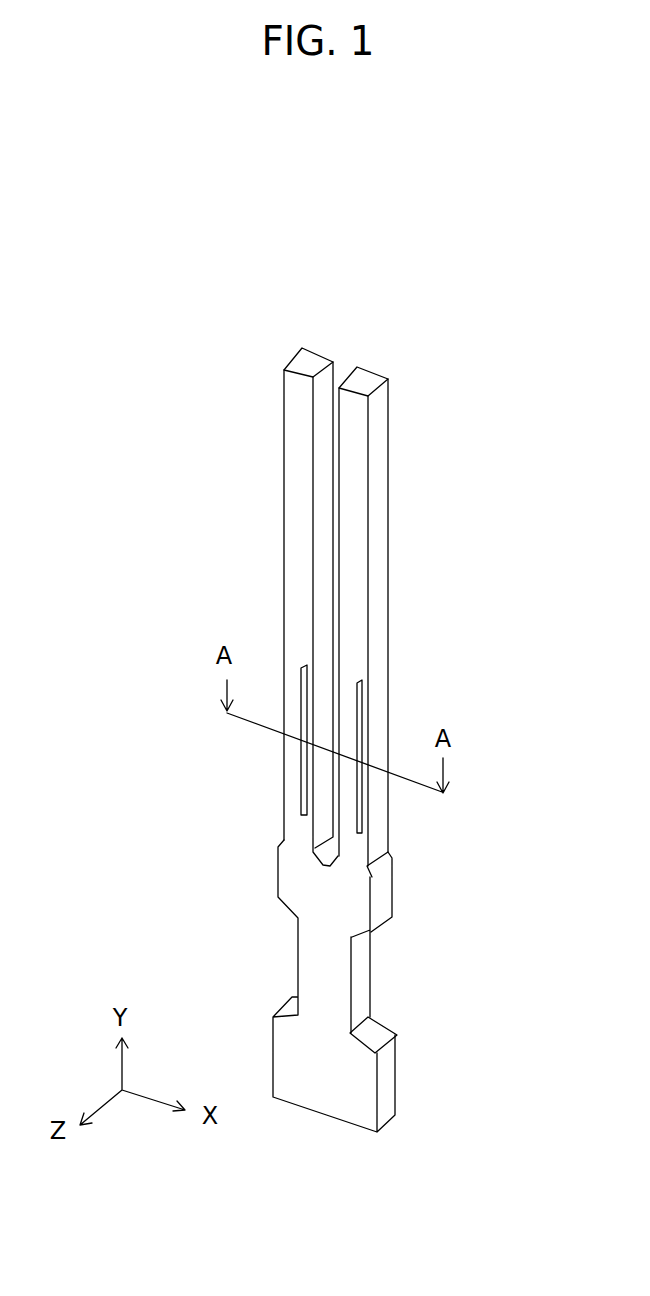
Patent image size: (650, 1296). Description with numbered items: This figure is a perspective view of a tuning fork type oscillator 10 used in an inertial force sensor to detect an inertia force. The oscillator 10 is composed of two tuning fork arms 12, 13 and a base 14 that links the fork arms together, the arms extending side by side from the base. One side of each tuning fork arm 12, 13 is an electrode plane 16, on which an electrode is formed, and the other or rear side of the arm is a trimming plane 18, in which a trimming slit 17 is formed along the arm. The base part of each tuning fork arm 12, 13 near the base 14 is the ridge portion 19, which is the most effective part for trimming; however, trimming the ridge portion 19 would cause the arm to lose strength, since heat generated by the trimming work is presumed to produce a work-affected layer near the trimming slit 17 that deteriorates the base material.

The tuning fork type oscillator 10 is at (443, 342).
The tuning fork arm 12 is at (302, 367).
The tuning fork arm 13 is at (362, 385).
The base 14 is at (290, 872).
The electrode plane 16 is at (372, 375).
The trimming slit 17 is at (363, 700).
The trimming plane 18 is at (303, 502).
The ridge portion 19 is at (387, 567).